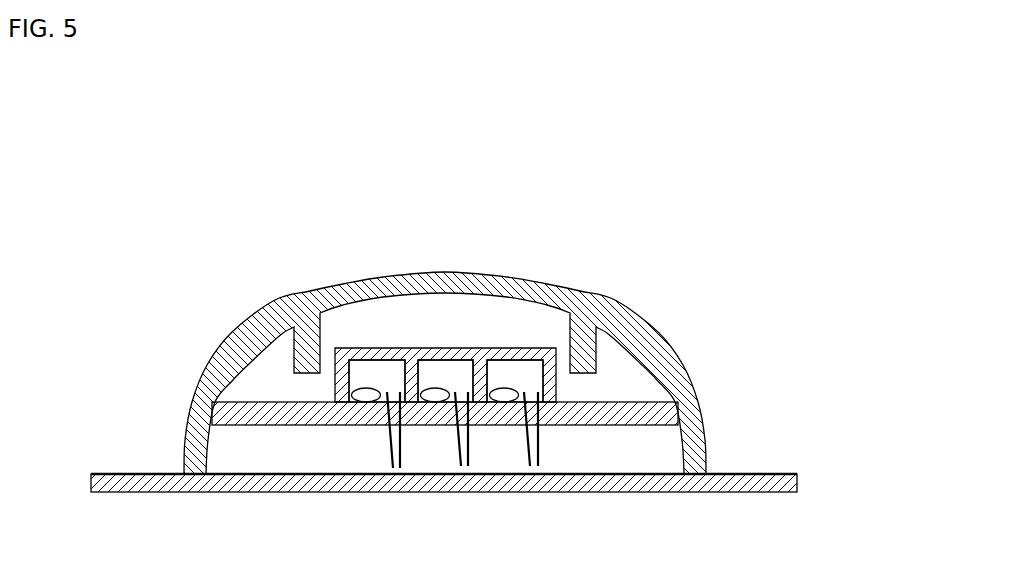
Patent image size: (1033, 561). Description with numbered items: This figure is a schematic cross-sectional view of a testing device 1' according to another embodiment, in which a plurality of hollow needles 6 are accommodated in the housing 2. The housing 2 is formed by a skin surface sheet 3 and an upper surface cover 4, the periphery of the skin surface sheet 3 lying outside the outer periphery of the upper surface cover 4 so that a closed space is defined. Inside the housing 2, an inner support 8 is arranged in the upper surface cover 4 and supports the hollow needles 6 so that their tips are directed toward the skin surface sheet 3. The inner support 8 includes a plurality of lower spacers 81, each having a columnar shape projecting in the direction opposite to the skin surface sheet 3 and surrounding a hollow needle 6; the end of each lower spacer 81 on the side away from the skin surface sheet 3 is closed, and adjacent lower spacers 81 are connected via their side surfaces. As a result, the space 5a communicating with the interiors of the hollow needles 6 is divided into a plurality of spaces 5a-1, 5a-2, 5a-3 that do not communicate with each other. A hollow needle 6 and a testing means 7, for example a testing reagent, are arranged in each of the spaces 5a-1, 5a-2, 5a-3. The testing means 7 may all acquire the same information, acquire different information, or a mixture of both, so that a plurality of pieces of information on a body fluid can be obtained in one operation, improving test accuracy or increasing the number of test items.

The testing device 1' is at (477, 324).
The housing 2 is at (818, 332).
The skin surface sheet 3 is at (767, 474).
The upper surface cover 4 is at (684, 363).
The space 5a is at (603, 222).
The space 5a-1 is at (373, 373).
The space 5a-2 is at (448, 373).
The space 5a-3 is at (517, 373).
The hollow needle 6 is at (389, 445).
The testing means 7 is at (366, 403).
The inner support 8 is at (565, 425).
The lower spacer 81 is at (556, 391).